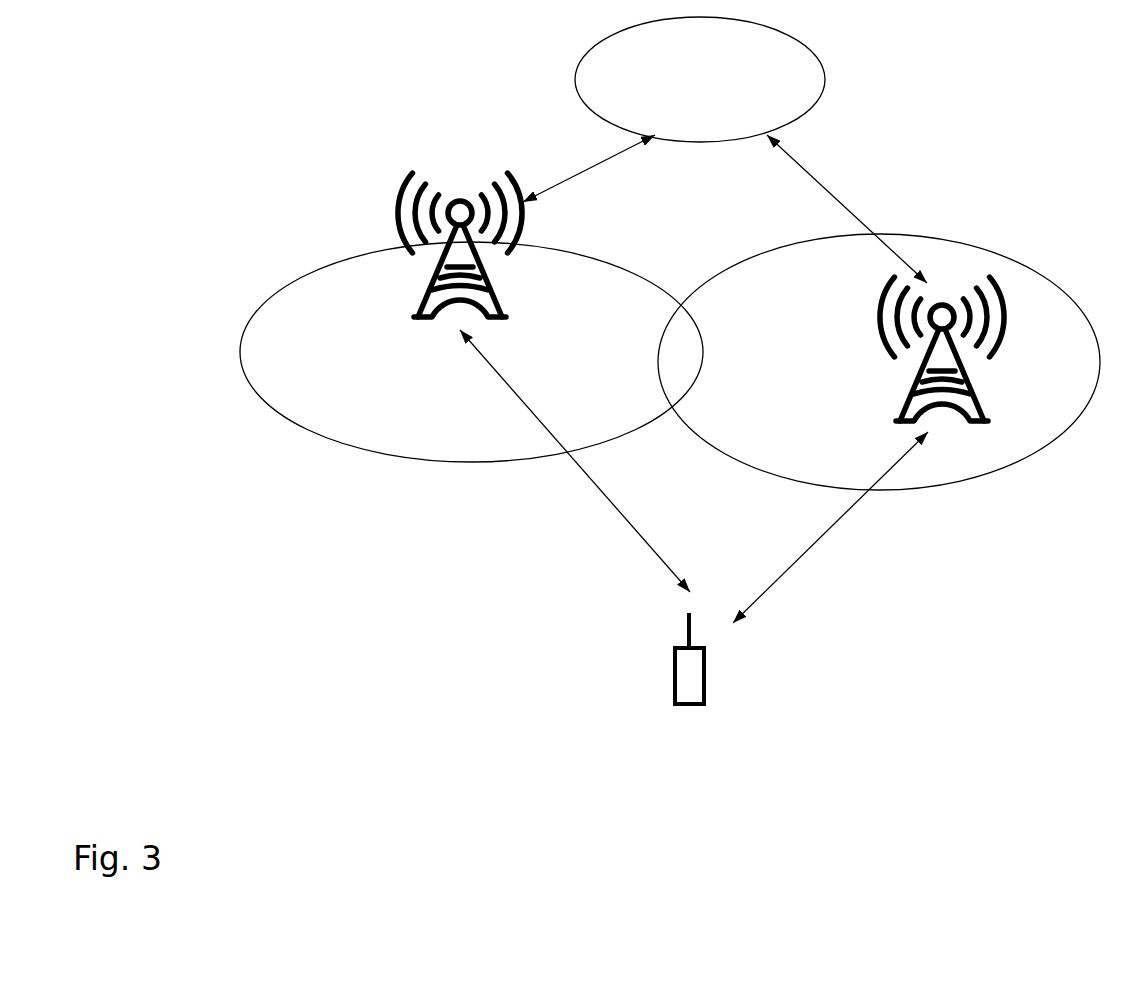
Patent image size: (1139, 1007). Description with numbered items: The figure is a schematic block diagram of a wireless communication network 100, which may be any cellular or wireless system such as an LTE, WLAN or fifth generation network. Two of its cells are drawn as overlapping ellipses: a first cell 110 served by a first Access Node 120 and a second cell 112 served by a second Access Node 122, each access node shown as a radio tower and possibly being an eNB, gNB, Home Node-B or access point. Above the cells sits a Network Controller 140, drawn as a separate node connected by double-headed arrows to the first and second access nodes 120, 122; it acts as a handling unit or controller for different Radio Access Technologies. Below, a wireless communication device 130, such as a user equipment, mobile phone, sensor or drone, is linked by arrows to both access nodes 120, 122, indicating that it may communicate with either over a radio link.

The wireless communication network 100 is at (958, 712).
The first cell 110 is at (963, 460).
The second cell 112 is at (307, 298).
The first Access Node 120 is at (962, 383).
The second Access Node 122 is at (420, 309).
The wireless communication device 130 is at (688, 672).
The Network Controller 140 is at (700, 79).